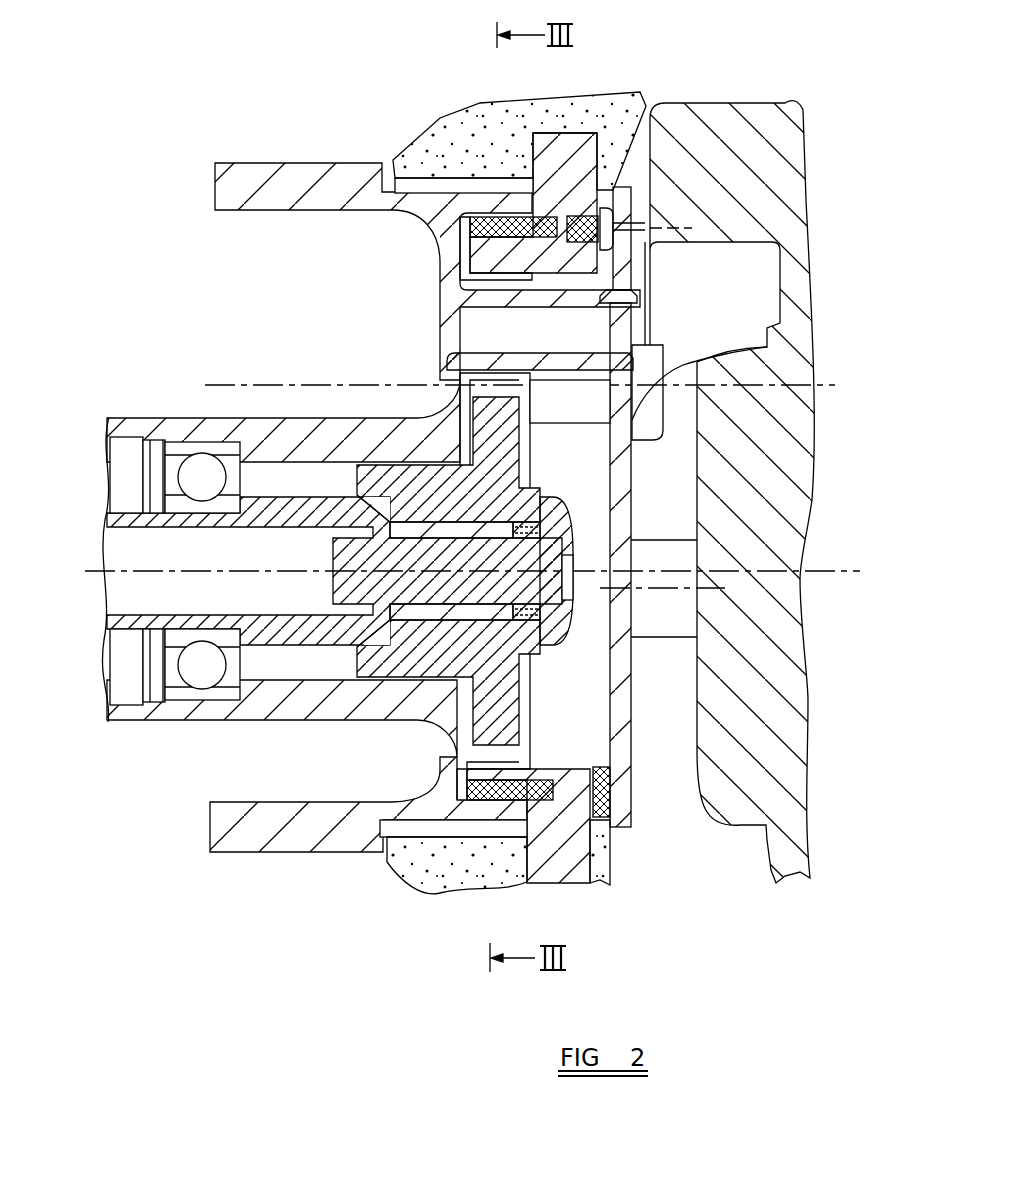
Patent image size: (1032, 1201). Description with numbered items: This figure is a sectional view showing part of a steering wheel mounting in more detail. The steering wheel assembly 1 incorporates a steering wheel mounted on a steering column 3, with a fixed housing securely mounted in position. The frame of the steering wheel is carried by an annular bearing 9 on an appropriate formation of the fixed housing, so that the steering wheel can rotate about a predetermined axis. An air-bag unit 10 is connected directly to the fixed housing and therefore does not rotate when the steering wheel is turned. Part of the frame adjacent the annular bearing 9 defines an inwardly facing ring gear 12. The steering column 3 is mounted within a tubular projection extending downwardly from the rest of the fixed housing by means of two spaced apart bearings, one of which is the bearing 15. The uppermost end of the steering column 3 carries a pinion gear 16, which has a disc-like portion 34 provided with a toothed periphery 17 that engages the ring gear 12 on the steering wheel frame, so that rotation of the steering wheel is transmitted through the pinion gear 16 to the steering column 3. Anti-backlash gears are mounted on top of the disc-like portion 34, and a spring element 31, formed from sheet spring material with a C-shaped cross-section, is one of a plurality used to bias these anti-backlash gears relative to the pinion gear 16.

The steering wheel assembly 1 is at (177, 161).
The steering column 3 is at (106, 640).
The annular bearing 9 is at (497, 280).
The air-bag unit 10 is at (747, 463).
The ring gear 12 is at (480, 220).
The bearing 15 is at (180, 702).
The pinion gear 16 is at (423, 650).
The toothed periphery 17 is at (470, 377).
The spring element 31 is at (532, 423).
The disc-like portion 34 is at (447, 705).